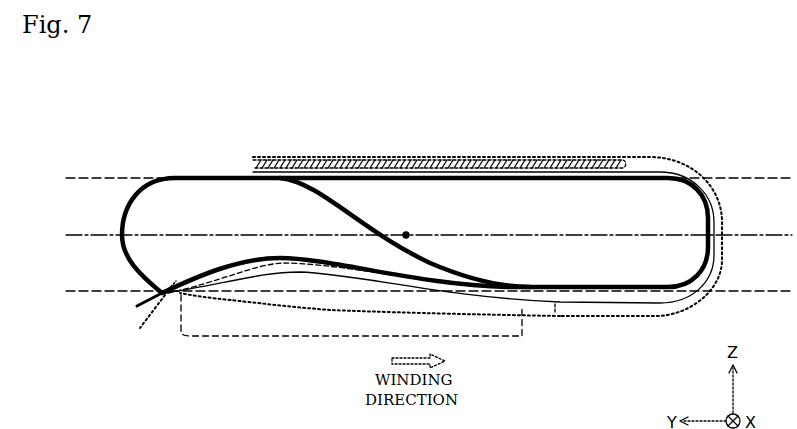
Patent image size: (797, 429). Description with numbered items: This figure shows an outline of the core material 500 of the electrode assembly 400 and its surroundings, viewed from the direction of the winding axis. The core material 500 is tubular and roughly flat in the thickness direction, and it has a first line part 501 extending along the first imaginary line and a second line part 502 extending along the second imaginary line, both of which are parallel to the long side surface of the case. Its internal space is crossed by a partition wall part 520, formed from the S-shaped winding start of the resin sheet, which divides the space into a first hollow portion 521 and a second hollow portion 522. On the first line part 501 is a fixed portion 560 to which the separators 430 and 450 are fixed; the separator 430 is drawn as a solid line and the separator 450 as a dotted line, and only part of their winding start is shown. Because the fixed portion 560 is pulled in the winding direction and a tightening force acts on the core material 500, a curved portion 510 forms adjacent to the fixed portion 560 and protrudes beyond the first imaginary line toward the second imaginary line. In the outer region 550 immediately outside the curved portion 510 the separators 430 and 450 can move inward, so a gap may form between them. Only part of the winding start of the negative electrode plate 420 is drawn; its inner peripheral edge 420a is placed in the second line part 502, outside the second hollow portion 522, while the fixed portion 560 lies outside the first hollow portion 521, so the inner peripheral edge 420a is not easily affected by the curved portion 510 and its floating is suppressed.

The electrode assembly 400 is at (776, 89).
The negative electrode plate 420 is at (522, 157).
The inner peripheral edge 420a is at (637, 158).
The separator 430 is at (556, 313).
The separator 450 is at (600, 318).
The core material 500 is at (167, 172).
The first line part 501 is at (578, 264).
The second line part 502 is at (565, 193).
The curved portion 510 is at (223, 256).
The partition wall part 520 is at (363, 208).
The first hollow portion 521 is at (253, 226).
The second hollow portion 522 is at (588, 226).
The outer region 550 is at (318, 337).
The fixed portion 560 is at (170, 297).